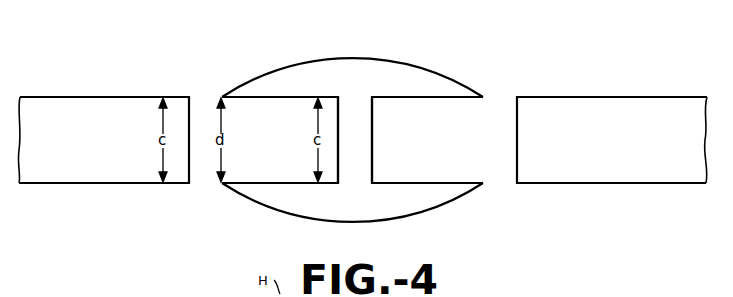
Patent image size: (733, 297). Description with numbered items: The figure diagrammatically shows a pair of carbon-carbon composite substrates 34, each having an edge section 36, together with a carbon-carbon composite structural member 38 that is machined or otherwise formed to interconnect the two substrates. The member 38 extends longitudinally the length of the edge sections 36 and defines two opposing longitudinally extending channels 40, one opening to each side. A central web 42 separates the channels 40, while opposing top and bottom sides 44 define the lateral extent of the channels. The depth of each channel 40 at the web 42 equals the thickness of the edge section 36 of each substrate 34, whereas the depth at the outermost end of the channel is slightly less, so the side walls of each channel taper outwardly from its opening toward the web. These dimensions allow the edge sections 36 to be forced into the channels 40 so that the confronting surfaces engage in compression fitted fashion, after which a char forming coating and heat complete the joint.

The substrate 34 is at (87, 100).
The edge section 36 is at (136, 160).
The carbon-carbon composite structural member 38 is at (352, 138).
The channel 40 is at (297, 104).
The central web 42 is at (362, 136).
The top and bottom sides 44 is at (377, 75).